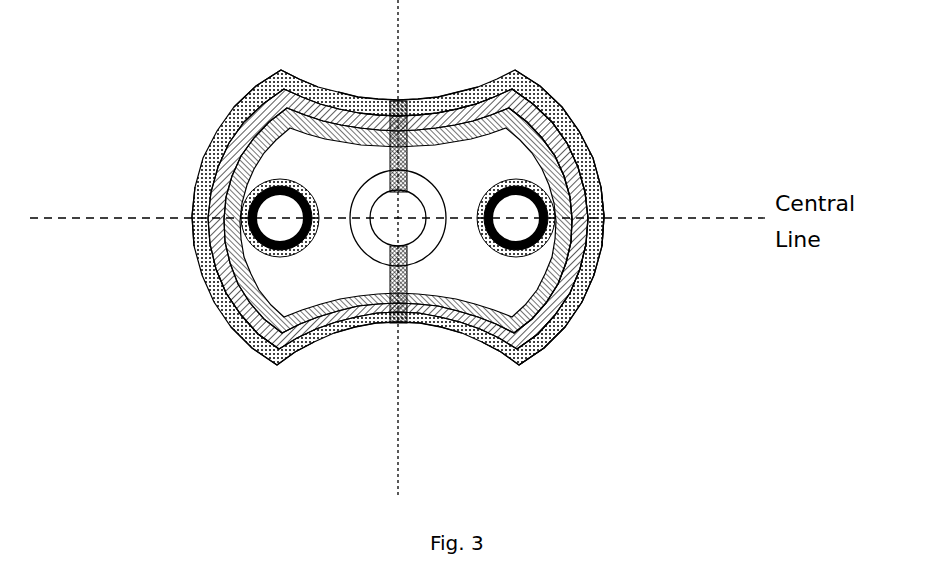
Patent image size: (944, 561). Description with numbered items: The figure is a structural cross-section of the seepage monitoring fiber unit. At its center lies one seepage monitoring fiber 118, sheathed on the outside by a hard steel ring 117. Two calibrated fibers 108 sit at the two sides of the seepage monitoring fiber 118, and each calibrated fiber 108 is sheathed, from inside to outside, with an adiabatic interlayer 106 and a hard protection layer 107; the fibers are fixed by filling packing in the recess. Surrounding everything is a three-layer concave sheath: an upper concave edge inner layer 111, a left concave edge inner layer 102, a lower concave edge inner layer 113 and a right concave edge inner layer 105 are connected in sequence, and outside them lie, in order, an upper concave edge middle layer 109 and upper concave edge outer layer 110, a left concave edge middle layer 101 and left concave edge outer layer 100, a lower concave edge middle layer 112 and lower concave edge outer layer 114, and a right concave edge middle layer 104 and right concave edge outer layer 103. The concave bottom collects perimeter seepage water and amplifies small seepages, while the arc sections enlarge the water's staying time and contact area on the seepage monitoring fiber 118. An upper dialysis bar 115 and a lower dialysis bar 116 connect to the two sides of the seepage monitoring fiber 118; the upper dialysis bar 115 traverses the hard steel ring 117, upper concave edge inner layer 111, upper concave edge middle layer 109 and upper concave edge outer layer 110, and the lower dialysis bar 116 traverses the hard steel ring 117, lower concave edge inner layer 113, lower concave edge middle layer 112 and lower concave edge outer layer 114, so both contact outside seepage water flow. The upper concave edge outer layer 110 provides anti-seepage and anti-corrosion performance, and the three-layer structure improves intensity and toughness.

The left concave edge outer layer 100 is at (230, 118).
The left concave edge middle layer 101 is at (230, 152).
The left concave edge inner layer 102 is at (200, 198).
The right concave edge outer layer 103 is at (558, 115).
The right concave edge middle layer 104 is at (580, 150).
The right concave edge inner layer 105 is at (600, 195).
The adiabatic interlayer 106 is at (195, 226).
The hard protection layer 107 is at (262, 246).
The calibrated fiber 108 is at (220, 298).
The upper concave edge middle layer 109 is at (268, 86).
The upper concave edge outer layer 110 is at (450, 100).
The upper concave edge inner layer 111 is at (457, 120).
The lower concave edge middle layer 112 is at (270, 345).
The lower concave edge inner layer 113 is at (473, 337).
The lower concave edge outer layer 114 is at (448, 327).
The upper dialysis bar 115 is at (393, 102).
The lower dialysis bar 116 is at (393, 326).
The hard steel ring 117 is at (427, 240).
The seepage monitoring fiber 118 is at (403, 203).